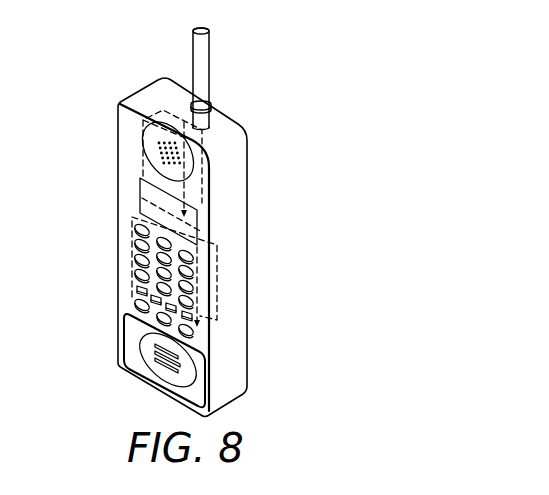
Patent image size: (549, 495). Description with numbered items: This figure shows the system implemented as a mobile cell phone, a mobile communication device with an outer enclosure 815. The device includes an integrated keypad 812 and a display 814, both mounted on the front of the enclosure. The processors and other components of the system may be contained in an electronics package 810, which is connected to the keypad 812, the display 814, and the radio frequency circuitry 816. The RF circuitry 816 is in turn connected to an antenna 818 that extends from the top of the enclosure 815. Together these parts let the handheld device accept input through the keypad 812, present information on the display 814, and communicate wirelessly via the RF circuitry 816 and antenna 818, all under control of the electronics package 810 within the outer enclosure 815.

The electronics package 810 is at (217, 291).
The integrated keypad 812 is at (140, 258).
The display 814 is at (140, 205).
The outer enclosure 815 is at (237, 332).
The radio frequency circuitry 816 is at (141, 177).
The antenna 818 is at (201, 62).